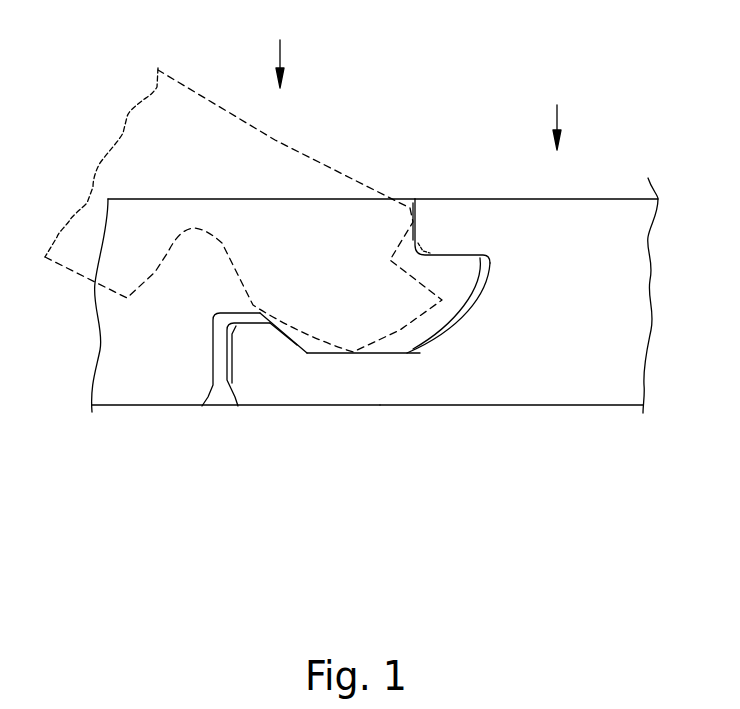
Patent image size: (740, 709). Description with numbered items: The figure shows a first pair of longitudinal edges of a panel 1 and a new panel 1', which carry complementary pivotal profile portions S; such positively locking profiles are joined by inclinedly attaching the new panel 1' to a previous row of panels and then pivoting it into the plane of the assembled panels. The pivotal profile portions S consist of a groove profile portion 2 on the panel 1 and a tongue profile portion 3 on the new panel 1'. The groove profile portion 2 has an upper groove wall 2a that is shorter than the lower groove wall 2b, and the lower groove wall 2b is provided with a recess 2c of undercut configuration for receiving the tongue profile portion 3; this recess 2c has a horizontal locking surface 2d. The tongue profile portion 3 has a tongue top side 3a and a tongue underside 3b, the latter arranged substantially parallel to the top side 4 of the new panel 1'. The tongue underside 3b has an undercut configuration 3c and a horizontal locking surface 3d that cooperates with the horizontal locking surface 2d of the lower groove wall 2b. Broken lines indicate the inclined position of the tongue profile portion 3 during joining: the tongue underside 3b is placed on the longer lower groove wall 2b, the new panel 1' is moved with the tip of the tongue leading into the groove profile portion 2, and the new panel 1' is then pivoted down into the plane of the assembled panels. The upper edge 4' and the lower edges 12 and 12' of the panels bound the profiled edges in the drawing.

The panel 1 is at (620, 295).
The new panel 1' is at (108, 305).
The groove profile portion 2 is at (530, 294).
The upper groove wall 2a is at (433, 210).
The lower groove wall 2b is at (380, 394).
The recess 2c is at (419, 353).
The horizontal locking surface 2d is at (296, 342).
The tongue profile portion 3 is at (156, 343).
The tongue top side 3a is at (463, 250).
The tongue underside 3b is at (362, 354).
The undercut configuration 3c is at (238, 405).
The horizontal locking surface 3d is at (287, 344).
The top side 4 is at (552, 150).
The upper surface of second panel 4' is at (227, 162).
The lower surface of first panel 12 is at (511, 459).
The lower surface of second panel 12' is at (228, 460).
The pivotal profile portions S is at (418, 82).